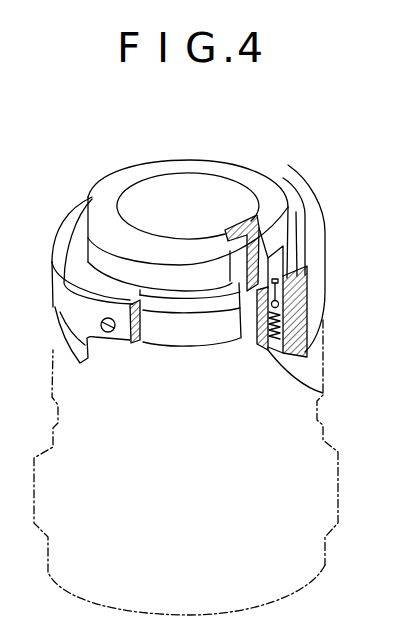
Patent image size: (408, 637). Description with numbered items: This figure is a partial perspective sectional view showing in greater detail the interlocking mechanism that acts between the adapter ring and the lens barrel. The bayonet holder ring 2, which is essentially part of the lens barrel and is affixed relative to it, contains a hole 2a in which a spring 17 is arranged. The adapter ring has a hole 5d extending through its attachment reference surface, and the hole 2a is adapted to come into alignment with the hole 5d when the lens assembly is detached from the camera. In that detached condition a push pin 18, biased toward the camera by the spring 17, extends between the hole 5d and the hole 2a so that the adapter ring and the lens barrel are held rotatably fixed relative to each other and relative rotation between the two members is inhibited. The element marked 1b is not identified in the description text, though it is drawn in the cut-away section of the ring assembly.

The annular flange of lens mount 1b is at (325, 247).
The bayonet holder ring 2 is at (325, 265).
The hole 2a is at (323, 393).
The hole 5d is at (300, 306).
The push pin 18 is at (302, 325).
The spring 17 is at (313, 343).